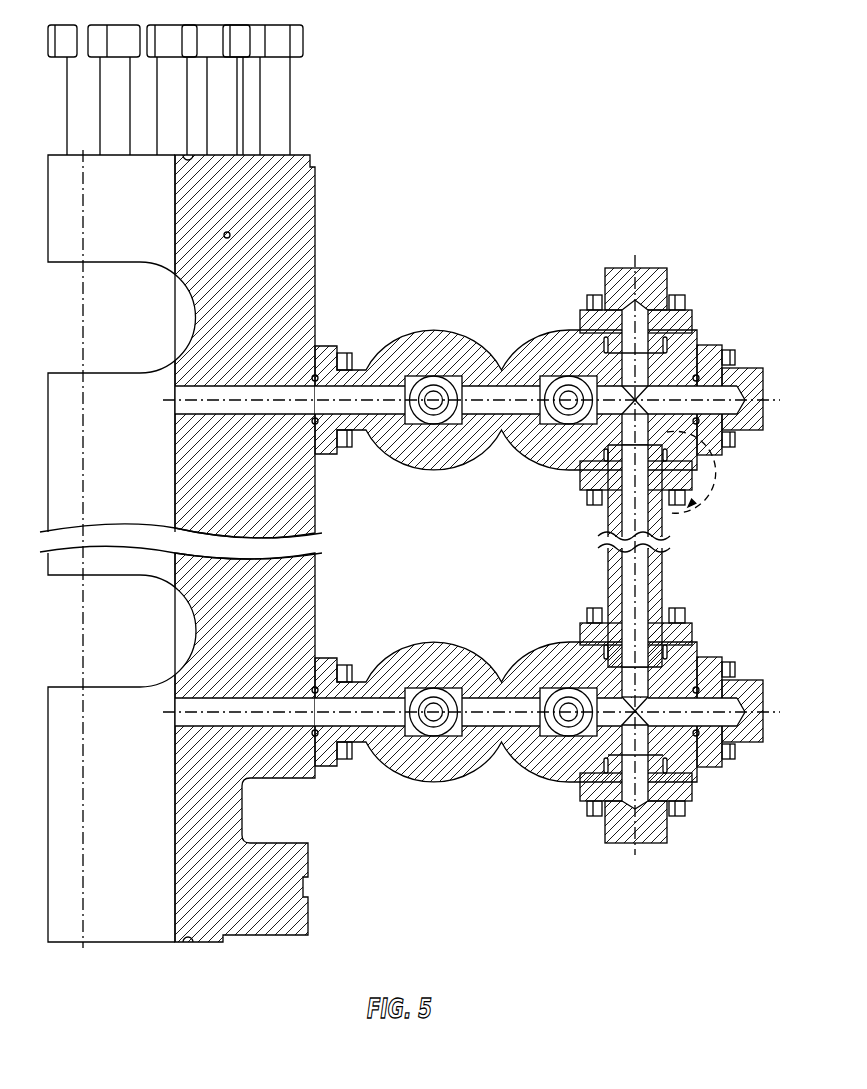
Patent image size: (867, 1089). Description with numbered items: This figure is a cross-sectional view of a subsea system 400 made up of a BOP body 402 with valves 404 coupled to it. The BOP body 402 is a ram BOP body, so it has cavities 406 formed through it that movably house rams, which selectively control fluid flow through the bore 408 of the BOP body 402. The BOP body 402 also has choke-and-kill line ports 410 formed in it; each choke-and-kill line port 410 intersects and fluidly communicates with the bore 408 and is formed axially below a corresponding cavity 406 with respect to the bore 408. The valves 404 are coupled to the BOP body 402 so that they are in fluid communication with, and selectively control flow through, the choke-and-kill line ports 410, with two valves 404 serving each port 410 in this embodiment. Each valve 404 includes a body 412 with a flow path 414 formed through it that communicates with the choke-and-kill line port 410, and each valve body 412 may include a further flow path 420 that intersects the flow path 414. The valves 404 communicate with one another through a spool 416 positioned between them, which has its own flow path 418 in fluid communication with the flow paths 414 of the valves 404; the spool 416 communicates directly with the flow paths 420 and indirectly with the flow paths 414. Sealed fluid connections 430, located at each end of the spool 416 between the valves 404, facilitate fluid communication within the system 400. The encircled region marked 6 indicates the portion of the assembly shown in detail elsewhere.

The subsea system 400 is at (406, 486).
The BOP body 402 is at (317, 193).
The valve 404 is at (538, 588).
The cavity 406 is at (64, 264).
The bore 408 is at (175, 220).
The choke-and-kill line port 410 is at (203, 387).
The valve body 412 is at (433, 333).
The flow path 414 is at (360, 410).
The spool 416 is at (668, 586).
The flow path 418 is at (610, 538).
The flow path 420 is at (622, 373).
The sealed fluid connection 430 is at (583, 464).
The section line for FIG. 6 is at (702, 516).